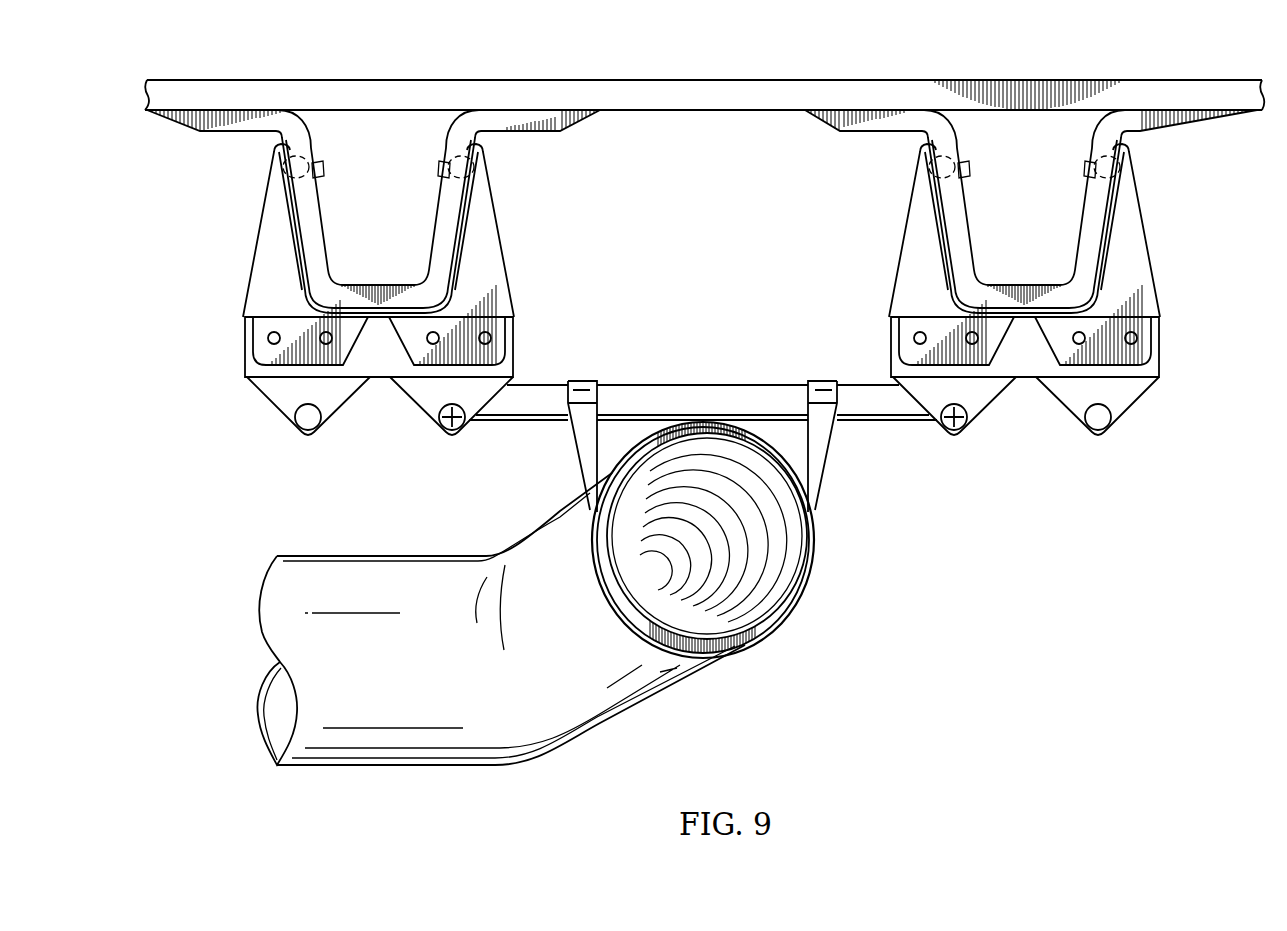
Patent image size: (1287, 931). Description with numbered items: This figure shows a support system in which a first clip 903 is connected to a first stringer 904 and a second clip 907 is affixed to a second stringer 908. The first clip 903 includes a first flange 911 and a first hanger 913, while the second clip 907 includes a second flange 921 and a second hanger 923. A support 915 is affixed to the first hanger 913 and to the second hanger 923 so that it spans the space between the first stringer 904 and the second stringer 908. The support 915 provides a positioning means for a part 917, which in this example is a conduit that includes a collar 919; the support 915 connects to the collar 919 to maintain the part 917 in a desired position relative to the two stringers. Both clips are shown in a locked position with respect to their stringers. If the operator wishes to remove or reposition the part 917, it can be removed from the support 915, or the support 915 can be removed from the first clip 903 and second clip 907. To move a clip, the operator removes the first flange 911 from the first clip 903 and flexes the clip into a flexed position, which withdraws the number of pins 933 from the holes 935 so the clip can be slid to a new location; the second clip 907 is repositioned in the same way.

The first clip 903 is at (262, 242).
The first stringer 904 is at (438, 215).
The second clip 907 is at (1145, 242).
The second stringer 908 is at (968, 215).
The first flange 911 is at (250, 367).
The first hanger 913 is at (413, 402).
The support 915 is at (752, 385).
The part 917 is at (362, 765).
The collar 919 is at (828, 462).
The second flange 921 is at (1153, 367).
The second hanger 923 is at (993, 403).
The number of pins 933 is at (322, 162).
The holes 935 is at (284, 167).